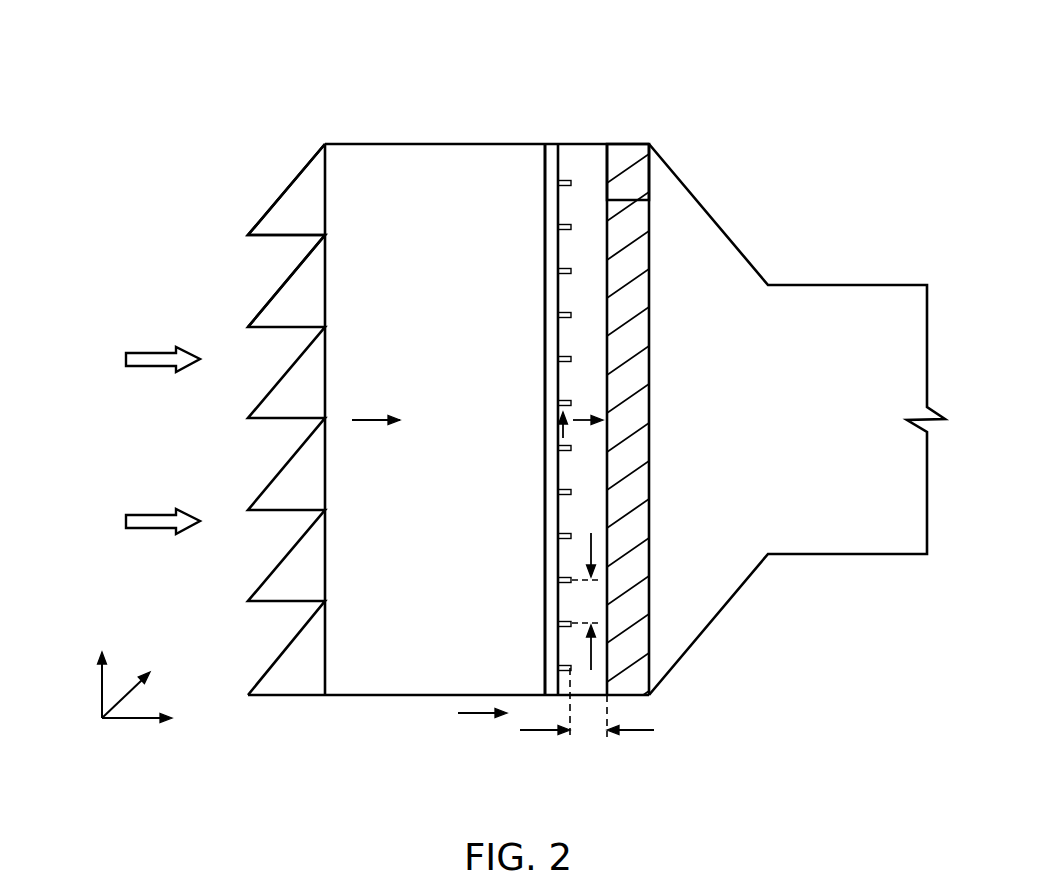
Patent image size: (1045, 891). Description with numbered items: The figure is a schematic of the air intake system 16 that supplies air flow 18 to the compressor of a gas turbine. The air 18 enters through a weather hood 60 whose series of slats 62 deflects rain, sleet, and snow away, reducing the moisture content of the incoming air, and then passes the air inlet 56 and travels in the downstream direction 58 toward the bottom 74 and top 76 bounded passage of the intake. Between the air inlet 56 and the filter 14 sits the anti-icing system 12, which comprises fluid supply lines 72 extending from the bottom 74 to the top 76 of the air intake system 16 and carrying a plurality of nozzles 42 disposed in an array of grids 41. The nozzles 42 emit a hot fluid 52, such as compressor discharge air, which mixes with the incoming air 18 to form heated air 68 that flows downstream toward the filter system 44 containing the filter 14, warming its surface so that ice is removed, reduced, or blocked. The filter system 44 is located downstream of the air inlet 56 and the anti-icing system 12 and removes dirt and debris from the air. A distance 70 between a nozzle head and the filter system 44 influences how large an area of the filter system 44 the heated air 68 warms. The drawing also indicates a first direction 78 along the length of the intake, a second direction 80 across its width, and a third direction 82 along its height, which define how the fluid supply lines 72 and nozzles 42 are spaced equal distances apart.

The anti-icing system 12 is at (551, 130).
The filter 14 is at (633, 178).
The air intake system 16 is at (728, 165).
The air flow 18 is at (146, 352).
The array of grids 41 is at (590, 205).
The nozzles 42 is at (572, 228).
The filter system 44 is at (639, 121).
The fluid 52 is at (568, 438).
The air inlet 56 is at (333, 265).
The downstream direction 58 is at (482, 718).
The weather hood 60 is at (275, 172).
The slats 62 is at (260, 313).
The heated air 68 is at (580, 432).
The distance 70 is at (640, 735).
The fluid supply lines 72 is at (550, 157).
The bottom 74 is at (393, 696).
The top 76 is at (337, 144).
The first direction 78 is at (130, 720).
The second direction 80 is at (124, 690).
The third direction 82 is at (100, 690).